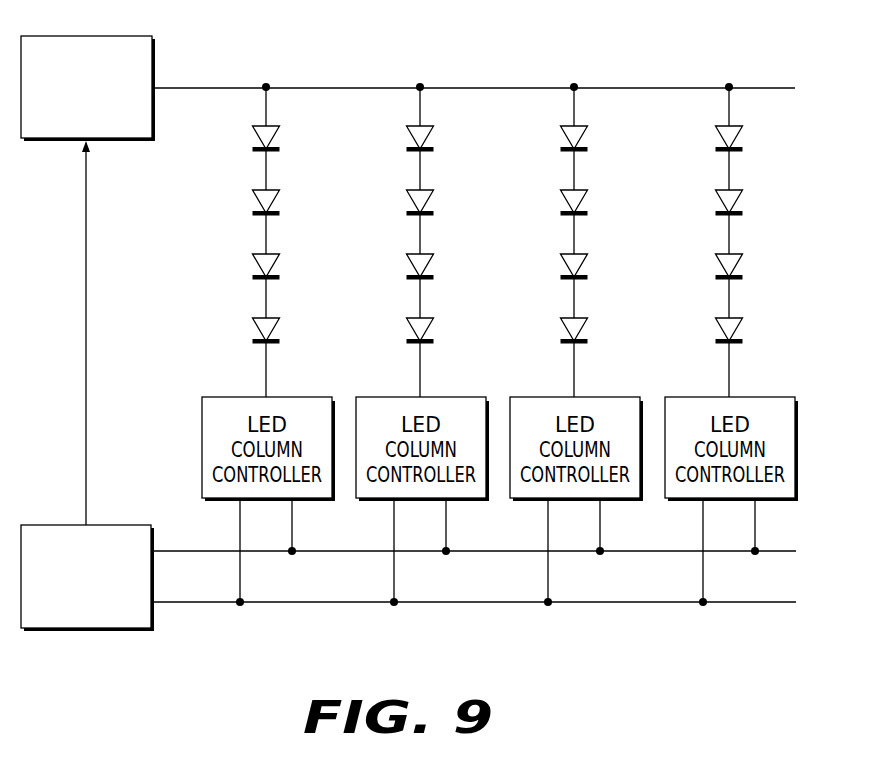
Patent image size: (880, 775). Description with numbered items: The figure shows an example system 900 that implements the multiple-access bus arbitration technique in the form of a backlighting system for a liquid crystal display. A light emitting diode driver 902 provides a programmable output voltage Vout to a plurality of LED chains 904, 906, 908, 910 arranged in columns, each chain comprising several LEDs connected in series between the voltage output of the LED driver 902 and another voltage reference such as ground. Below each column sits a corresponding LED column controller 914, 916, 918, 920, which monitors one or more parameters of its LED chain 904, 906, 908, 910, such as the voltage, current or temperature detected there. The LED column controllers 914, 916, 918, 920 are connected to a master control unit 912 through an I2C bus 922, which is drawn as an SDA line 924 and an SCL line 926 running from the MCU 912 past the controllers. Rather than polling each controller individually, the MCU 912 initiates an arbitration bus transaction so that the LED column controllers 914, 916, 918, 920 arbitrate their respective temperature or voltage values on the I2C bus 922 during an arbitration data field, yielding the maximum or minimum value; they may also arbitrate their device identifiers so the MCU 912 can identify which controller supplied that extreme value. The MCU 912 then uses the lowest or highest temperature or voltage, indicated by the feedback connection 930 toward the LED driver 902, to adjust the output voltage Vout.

The system 900 is at (810, 229).
The LED driver 902 is at (141, 124).
The LED chain 904 is at (297, 126).
The LED chain 906 is at (451, 126).
The LED chain 908 is at (605, 126).
The LED chain 910 is at (762, 126).
The master control unit 912 is at (141, 616).
The LED column controller 914 is at (308, 396).
The LED column controller 916 is at (462, 396).
The LED column controller 918 is at (616, 396).
The LED column controller 920 is at (771, 396).
The I2C bus 922 is at (501, 585).
The SDA line 924 is at (258, 553).
The SCL line 926 is at (209, 604).
The feedback signal line 930 is at (87, 439).